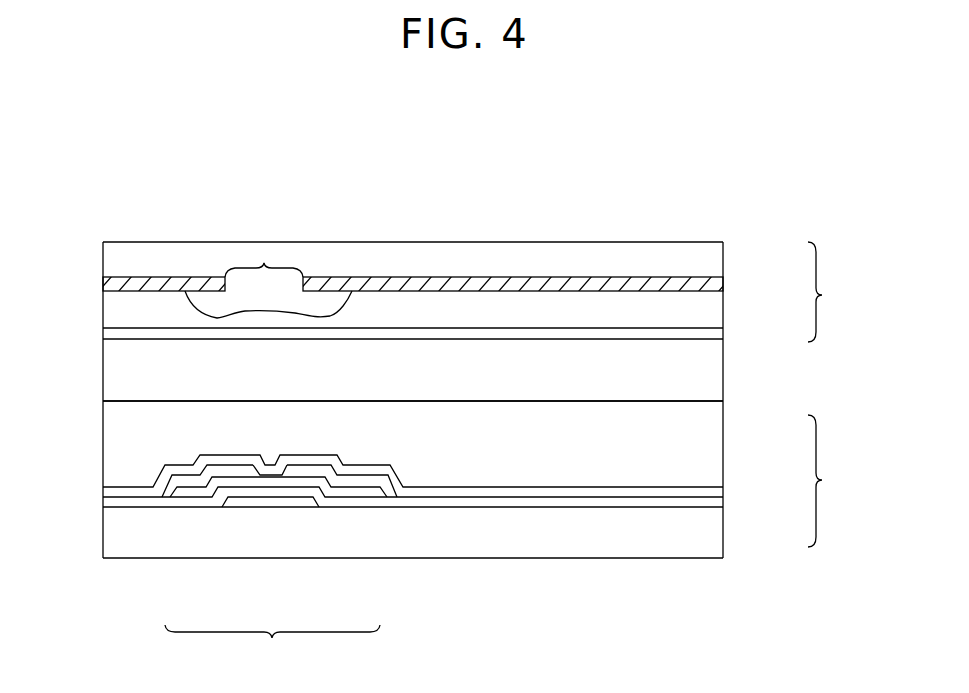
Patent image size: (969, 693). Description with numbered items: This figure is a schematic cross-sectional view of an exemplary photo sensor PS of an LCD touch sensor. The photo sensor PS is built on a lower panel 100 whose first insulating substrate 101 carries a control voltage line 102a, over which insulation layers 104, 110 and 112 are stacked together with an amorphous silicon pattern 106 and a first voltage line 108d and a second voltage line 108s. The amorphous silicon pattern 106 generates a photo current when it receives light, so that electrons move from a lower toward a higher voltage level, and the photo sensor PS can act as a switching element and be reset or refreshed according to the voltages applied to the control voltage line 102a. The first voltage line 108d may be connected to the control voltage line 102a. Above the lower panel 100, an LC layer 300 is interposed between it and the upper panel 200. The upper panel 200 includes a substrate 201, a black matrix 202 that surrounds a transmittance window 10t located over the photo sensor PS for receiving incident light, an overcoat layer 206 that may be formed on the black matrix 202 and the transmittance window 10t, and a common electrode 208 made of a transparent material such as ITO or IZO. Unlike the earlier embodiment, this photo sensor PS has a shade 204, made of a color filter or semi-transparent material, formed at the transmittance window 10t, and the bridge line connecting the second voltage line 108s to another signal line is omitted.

The upper substrate 201 is at (713, 256).
The black matrix 202 is at (713, 283).
The shade 204 is at (212, 306).
The overcoat layer 206 is at (713, 309).
The common electrode 208 is at (713, 333).
The upper panel 200 is at (838, 292).
The transmittance window 10t is at (262, 267).
The LC layer 300 is at (713, 373).
The insulation layer 112 is at (713, 428).
The insulation layer 110 is at (723, 487).
The first voltage line 108d is at (188, 482).
The second voltage line 108s is at (348, 483).
The amorphous silicon pattern 106 is at (247, 482).
The insulation layer 104 is at (717, 499).
The control voltage line 102a is at (288, 503).
The first insulating substrate 101 is at (718, 537).
The lower panel 100 is at (838, 481).
The photo sensor PS is at (272, 644).